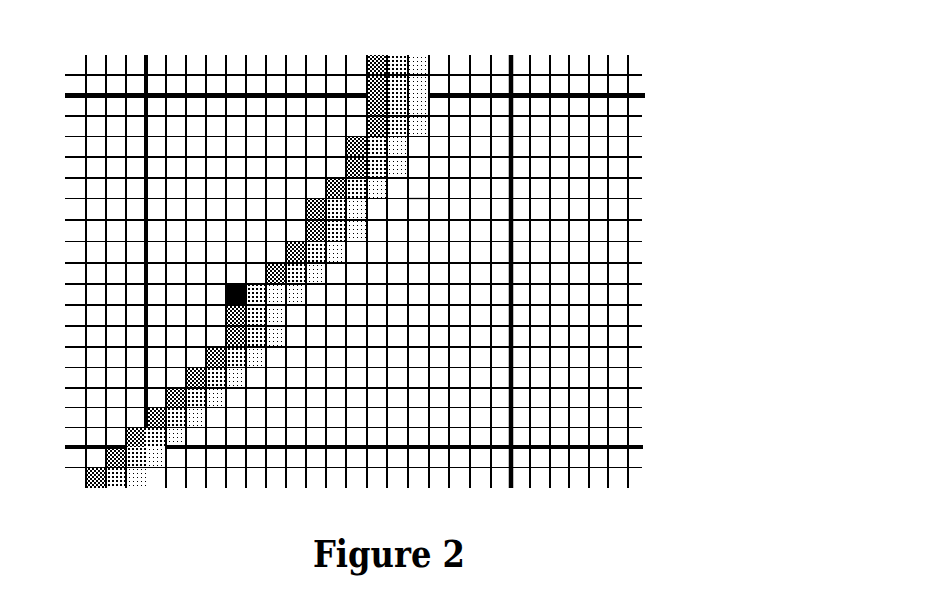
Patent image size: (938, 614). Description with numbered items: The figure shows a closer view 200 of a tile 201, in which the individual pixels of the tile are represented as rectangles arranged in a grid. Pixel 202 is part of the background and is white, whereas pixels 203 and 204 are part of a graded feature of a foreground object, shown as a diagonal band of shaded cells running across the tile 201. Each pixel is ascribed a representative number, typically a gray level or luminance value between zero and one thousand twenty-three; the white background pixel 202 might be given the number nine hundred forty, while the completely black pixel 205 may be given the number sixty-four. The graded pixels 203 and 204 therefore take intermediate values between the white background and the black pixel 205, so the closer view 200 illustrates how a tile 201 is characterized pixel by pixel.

The closer view 200 is at (658, 77).
The tile 201 is at (516, 147).
The pixel 202 is at (438, 189).
The pixel 203 is at (334, 230).
The pixel 204 is at (346, 134).
The completely black pixel 205 is at (217, 293).